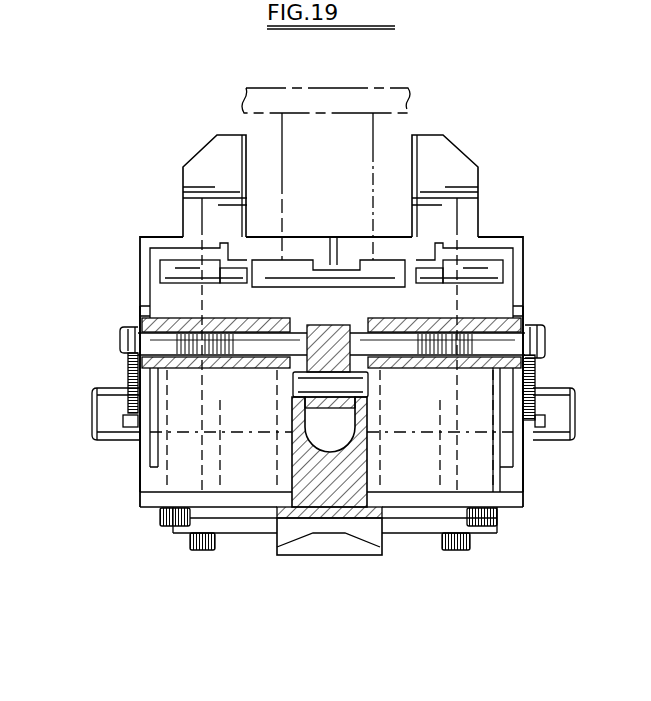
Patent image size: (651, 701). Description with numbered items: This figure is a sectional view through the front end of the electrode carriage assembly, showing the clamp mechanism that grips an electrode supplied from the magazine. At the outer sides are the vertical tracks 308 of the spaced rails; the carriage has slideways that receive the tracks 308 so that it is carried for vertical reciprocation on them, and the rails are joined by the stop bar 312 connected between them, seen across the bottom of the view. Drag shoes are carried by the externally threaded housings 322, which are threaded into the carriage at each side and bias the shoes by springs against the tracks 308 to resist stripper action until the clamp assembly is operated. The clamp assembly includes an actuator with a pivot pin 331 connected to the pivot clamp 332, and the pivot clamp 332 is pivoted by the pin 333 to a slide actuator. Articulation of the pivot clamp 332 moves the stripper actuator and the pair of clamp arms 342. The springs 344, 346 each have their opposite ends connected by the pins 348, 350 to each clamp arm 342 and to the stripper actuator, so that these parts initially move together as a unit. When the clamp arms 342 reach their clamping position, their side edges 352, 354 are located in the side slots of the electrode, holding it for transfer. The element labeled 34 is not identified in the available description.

The vise assembly 34 is at (152, 271).
The vertical track 308 is at (224, 143).
The stop bar 312 is at (258, 527).
The externally threaded housing 322 is at (126, 440).
The pivot pin 331 is at (298, 340).
The pivot clamp 332 is at (333, 357).
The pin 333 is at (292, 388).
The clamp arm 342 is at (510, 287).
The spring 344 is at (125, 373).
The spring 346 is at (536, 376).
The pin 348 is at (548, 338).
The pin 350 is at (540, 430).
The side edge 352 is at (155, 247).
The side edge 354 is at (478, 247).